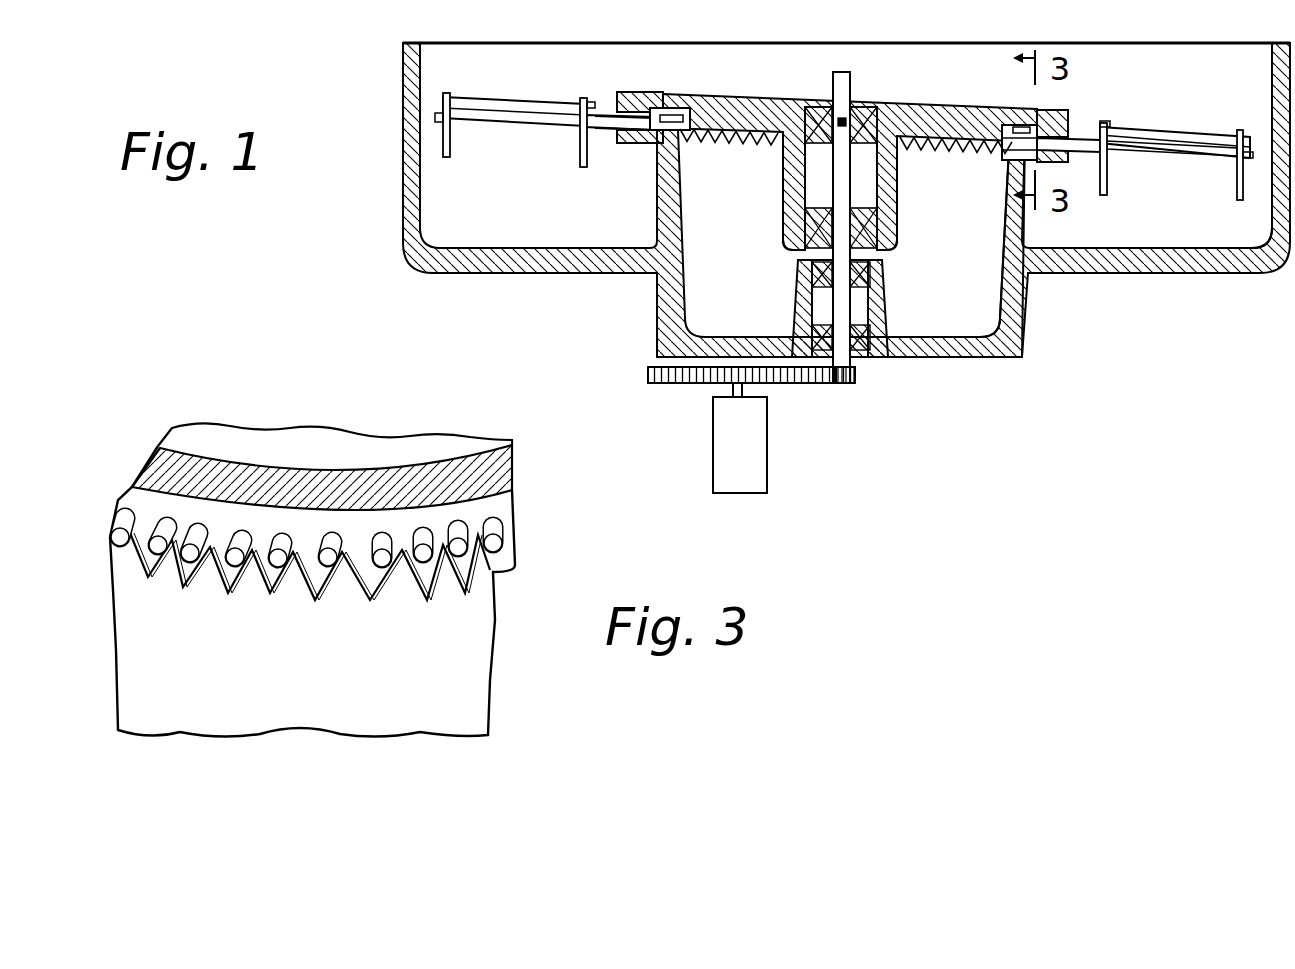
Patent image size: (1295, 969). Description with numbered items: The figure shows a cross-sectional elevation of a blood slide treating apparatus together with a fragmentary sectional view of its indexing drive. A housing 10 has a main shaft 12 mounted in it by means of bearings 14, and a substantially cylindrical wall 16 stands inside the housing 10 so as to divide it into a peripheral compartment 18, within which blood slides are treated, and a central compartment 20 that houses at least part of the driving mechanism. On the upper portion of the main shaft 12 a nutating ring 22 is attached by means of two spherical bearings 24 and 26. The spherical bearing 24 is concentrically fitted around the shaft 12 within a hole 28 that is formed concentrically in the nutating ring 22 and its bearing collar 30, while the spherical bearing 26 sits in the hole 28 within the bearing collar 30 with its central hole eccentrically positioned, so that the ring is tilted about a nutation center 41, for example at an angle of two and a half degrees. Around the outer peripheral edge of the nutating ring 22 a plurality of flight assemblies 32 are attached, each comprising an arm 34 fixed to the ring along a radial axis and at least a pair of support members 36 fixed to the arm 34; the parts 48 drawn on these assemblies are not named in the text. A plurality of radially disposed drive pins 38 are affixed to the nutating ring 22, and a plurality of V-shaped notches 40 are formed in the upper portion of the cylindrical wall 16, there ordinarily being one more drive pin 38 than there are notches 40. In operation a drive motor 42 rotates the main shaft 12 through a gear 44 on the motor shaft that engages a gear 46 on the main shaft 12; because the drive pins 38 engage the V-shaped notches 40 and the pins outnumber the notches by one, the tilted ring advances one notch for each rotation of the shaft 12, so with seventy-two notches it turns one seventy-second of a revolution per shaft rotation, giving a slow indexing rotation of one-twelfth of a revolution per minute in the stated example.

In FIG. 1, the housing 10 is at (1190, 274).
In FIG. 1, the main shaft 12 is at (838, 83).
In FIG. 1, the bearings 14 is at (880, 303).
In FIG. 1, the cylindrical wall 16 is at (1013, 221).
In FIG. 3, the cylindrical wall 16 is at (428, 736).
In FIG. 1, the peripheral compartment 18 is at (1122, 237).
In FIG. 1, the central compartment 20 is at (963, 320).
In FIG. 1, the nutating ring 22 is at (947, 105).
In FIG. 3, the nutating ring 22 is at (497, 438).
In FIG. 1, the spherical bearing 24 is at (858, 110).
In FIG. 1, the spherical bearing 26 is at (807, 230).
In FIG. 1, the hole 28 is at (862, 192).
In FIG. 1, the bearing collar 30 is at (790, 197).
In FIG. 1, the flight assemblies 32 is at (553, 134).
In FIG. 1, the arm 34 is at (600, 133).
In FIG. 1, the support members 36 is at (580, 162).
In FIG. 1, the drive pins 38 is at (669, 106).
In FIG. 3, the drive pins 38 is at (462, 530).
In FIG. 1, the V-shaped notches 40 is at (730, 141).
In FIG. 3, the V-shaped notches 40 is at (420, 572).
In FIG. 1, the nutation center 41 is at (843, 118).
In FIG. 1, the drive motor 42 is at (757, 462).
In FIG. 1, the gear 44 is at (660, 384).
In FIG. 1, the gear 46 is at (842, 384).
In FIG. 1, the roller 48 is at (506, 98).